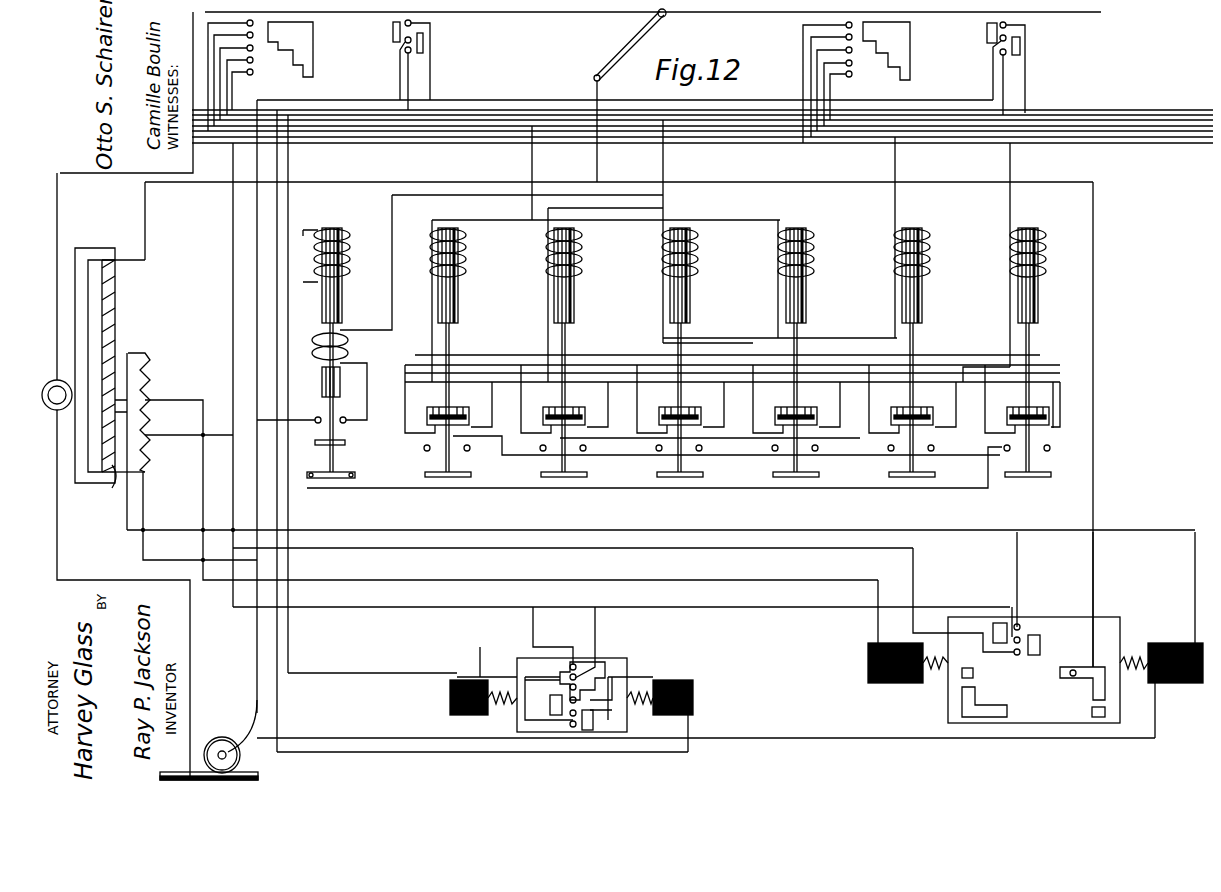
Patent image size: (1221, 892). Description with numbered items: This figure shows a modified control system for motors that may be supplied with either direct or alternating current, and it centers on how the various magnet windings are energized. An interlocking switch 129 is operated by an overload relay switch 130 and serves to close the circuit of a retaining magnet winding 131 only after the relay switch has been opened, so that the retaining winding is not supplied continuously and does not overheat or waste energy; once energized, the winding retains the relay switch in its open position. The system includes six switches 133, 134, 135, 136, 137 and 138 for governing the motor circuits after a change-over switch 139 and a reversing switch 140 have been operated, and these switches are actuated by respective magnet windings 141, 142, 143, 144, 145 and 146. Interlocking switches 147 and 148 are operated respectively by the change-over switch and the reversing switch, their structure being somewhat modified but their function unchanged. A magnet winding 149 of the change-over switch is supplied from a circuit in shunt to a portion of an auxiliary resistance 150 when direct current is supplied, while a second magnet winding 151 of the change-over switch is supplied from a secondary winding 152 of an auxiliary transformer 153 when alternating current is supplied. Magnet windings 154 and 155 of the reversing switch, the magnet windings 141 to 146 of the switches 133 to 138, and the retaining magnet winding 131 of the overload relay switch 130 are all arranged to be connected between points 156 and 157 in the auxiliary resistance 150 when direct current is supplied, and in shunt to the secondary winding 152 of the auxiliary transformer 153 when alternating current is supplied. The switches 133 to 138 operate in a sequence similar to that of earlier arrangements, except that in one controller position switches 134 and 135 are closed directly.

The interlocking switch 129 is at (318, 427).
The overload relay switch 130 is at (654, 474).
The retaining magnet winding 131 is at (348, 345).
The switch 133 is at (448, 400).
The switch 134 is at (564, 400).
The switch 135 is at (680, 400).
The switch 136 is at (796, 400).
The switch 137 is at (912, 400).
The switch 138 is at (1025, 400).
The change-over switch 139 is at (948, 712).
The reversing switch 140 is at (517, 725).
The magnet winding 141 is at (466, 262).
The magnet winding 142 is at (582, 262).
The magnet winding 143 is at (698, 262).
The magnet winding 144 is at (814, 262).
The magnet winding 145 is at (930, 262).
The magnet winding 146 is at (1046, 262).
The interlocking switch 147 is at (1018, 656).
The interlocking switch 148 is at (573, 728).
The magnet winding of the change-over switch 149 is at (868, 668).
The auxiliary resistance 150 is at (150, 375).
The magnet winding of the change-over switch 151 is at (1175, 683).
The secondary winding 152 is at (112, 478).
The auxiliary transformer 153 is at (96, 252).
The magnet winding of the reversing switch 154 is at (450, 700).
The magnet winding of the reversing switch 155 is at (693, 700).
The point in the auxiliary resistance 156 is at (150, 438).
The point in the auxiliary resistance 157 is at (145, 468).